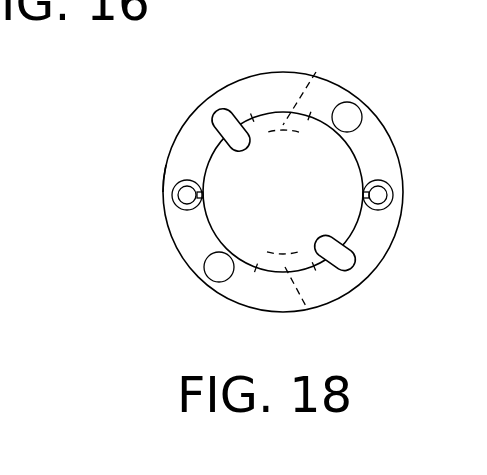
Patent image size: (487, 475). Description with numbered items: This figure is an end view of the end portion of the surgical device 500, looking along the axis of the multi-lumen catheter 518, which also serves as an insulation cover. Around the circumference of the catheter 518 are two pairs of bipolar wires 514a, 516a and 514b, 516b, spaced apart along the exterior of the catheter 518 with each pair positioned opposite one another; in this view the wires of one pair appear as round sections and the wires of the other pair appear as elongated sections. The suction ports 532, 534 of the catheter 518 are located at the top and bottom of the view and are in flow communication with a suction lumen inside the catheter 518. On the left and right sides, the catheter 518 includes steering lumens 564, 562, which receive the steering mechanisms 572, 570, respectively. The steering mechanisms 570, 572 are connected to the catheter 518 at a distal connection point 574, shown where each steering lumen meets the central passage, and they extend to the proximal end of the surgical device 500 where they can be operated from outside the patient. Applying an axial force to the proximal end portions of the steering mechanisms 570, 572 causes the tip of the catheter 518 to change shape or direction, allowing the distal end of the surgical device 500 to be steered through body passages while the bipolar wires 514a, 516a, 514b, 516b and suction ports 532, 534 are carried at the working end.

The surgical device 500 is at (421, 69).
The multi-lumen catheter 518 is at (167, 222).
The suction port 532 is at (318, 74).
The suction port 534 is at (308, 310).
The bipolar wire 514a is at (353, 117).
The bipolar wire 514b is at (219, 276).
The bipolar wire 516a is at (345, 263).
The bipolar wire 516b is at (217, 113).
The steering lumen 562 is at (380, 183).
The steering lumen 564 is at (171, 187).
The steering mechanism 570 is at (390, 198).
The steering mechanism 572 is at (168, 205).
The distal connection point 574 is at (192, 183).